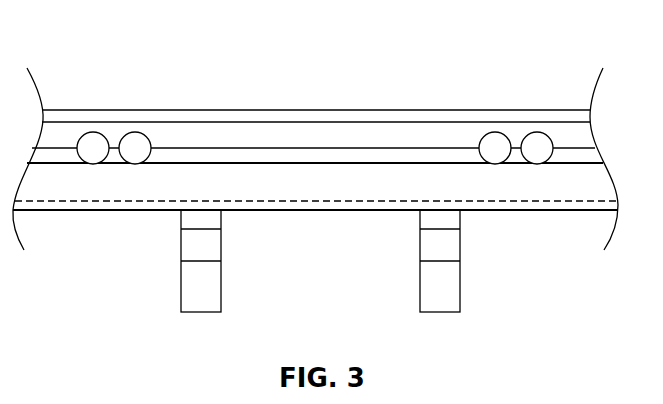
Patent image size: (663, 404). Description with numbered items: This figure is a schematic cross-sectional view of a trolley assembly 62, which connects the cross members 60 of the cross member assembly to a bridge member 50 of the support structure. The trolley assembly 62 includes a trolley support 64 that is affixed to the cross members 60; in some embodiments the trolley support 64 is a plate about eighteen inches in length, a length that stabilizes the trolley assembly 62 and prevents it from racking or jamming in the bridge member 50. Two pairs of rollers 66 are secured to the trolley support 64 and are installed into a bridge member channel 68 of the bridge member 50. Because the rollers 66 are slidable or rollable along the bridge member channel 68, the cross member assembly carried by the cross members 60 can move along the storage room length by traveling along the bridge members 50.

The bridge member 50 is at (425, 110).
The cross member 60 is at (187, 250).
The trolley assembly 62 is at (168, 71).
The trolley support 64 is at (410, 178).
The rollers 66 is at (137, 137).
The bridge member channel 68 is at (262, 128).